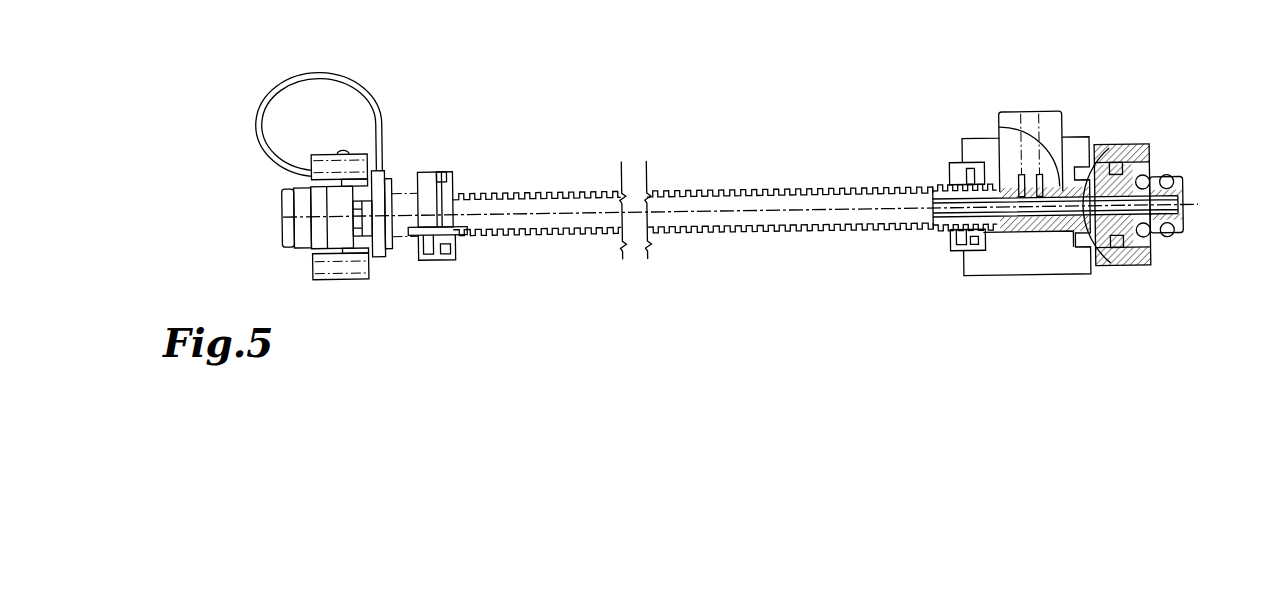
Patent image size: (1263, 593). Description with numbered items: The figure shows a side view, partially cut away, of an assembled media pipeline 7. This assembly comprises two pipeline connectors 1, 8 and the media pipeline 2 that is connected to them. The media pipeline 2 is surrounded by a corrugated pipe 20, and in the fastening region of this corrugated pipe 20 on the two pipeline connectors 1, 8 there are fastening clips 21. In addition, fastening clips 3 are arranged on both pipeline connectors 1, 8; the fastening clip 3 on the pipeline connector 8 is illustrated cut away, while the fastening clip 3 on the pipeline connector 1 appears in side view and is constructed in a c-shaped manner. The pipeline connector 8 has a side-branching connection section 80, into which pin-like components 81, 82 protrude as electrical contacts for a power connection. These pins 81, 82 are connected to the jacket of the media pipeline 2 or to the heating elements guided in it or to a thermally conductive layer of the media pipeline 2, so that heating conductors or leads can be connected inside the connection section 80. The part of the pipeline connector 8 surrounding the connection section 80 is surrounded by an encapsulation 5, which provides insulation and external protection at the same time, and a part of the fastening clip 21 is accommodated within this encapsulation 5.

The pipeline connector 1 is at (396, 90).
The media pipeline 2 is at (933, 195).
The fastening clip 3 is at (357, 275).
The encapsulation 5 is at (1073, 265).
The assembled media pipeline 7 is at (633, 90).
The pipeline connector 8 is at (1018, 90).
The corrugated pipe 20 is at (827, 190).
The fastening clip 21 is at (438, 172).
The connection section 80 is at (1064, 112).
The pin-like component 81 is at (1021, 190).
The pin-like component 82 is at (1040, 192).